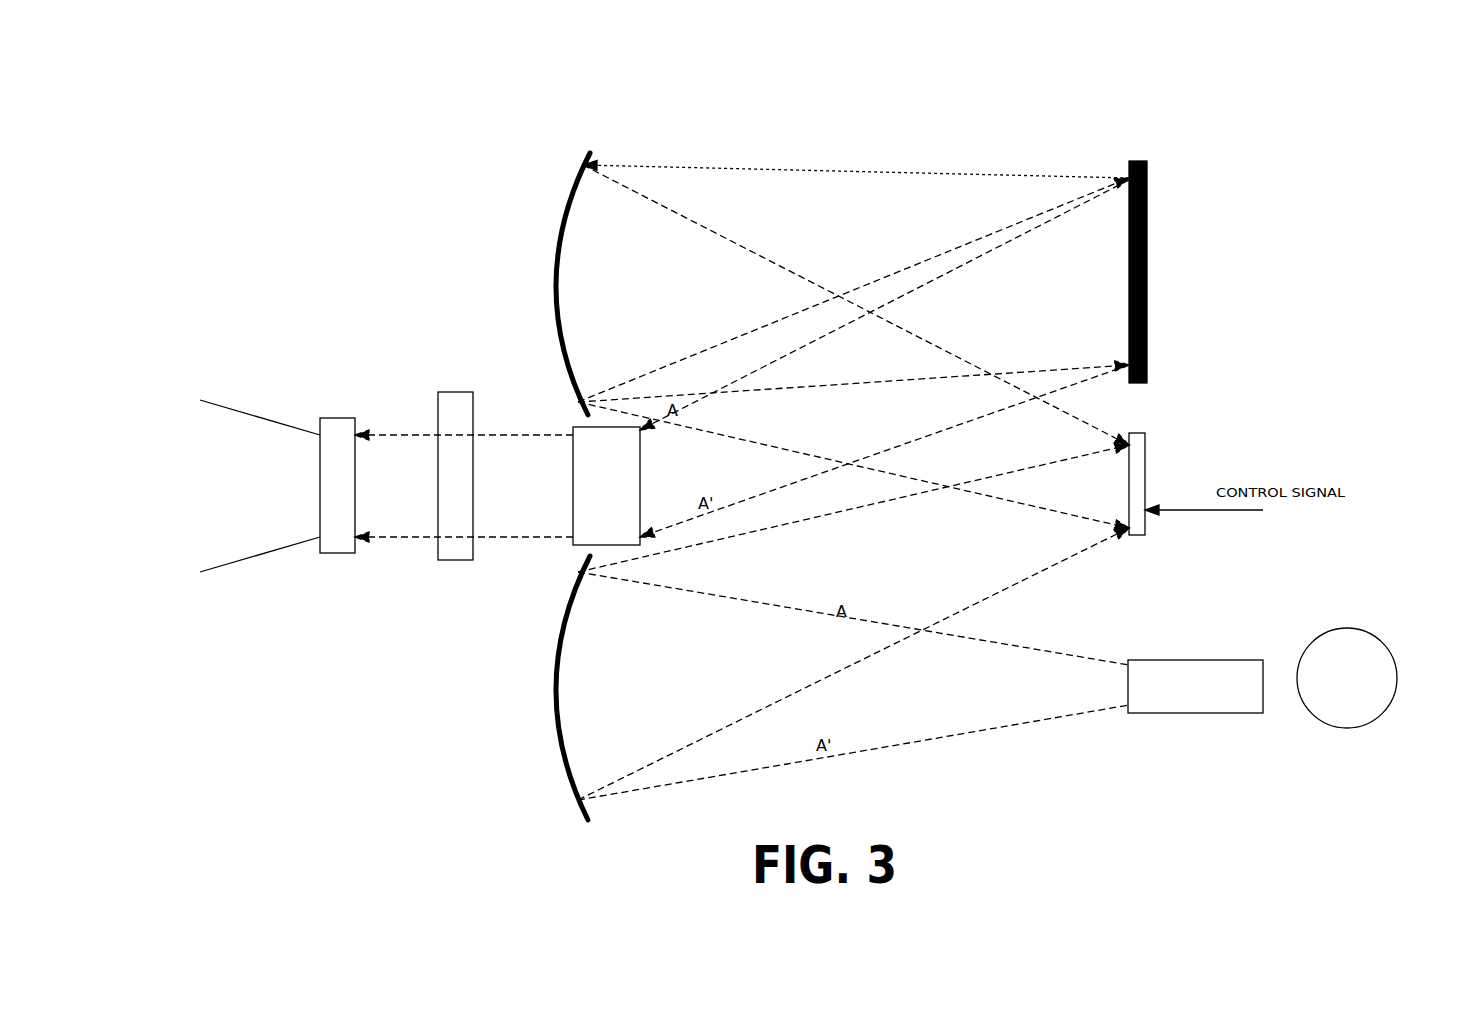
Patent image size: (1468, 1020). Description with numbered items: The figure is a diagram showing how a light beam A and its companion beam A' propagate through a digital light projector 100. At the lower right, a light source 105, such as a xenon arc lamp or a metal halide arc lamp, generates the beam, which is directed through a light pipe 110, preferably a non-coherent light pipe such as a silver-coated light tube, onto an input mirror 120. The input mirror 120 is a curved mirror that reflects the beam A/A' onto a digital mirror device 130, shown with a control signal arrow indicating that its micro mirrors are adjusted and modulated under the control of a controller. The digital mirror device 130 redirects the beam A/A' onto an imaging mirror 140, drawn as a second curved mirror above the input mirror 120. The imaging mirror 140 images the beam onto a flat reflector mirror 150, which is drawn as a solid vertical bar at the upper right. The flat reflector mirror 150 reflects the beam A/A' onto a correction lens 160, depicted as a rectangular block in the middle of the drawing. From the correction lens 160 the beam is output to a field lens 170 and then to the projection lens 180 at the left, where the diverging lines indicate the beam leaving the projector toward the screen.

The digital light projector 100 is at (318, 74).
The light source 105 is at (1347, 628).
The light pipe 110 is at (1245, 670).
The input mirror 120 is at (557, 655).
The digital mirror device 130 is at (1145, 468).
The imaging mirror 140 is at (562, 218).
The flat reflector mirror 150 is at (1147, 222).
The correction lens 160 is at (590, 452).
The field lens 170 is at (455, 392).
The projection lens 180 is at (337, 436).